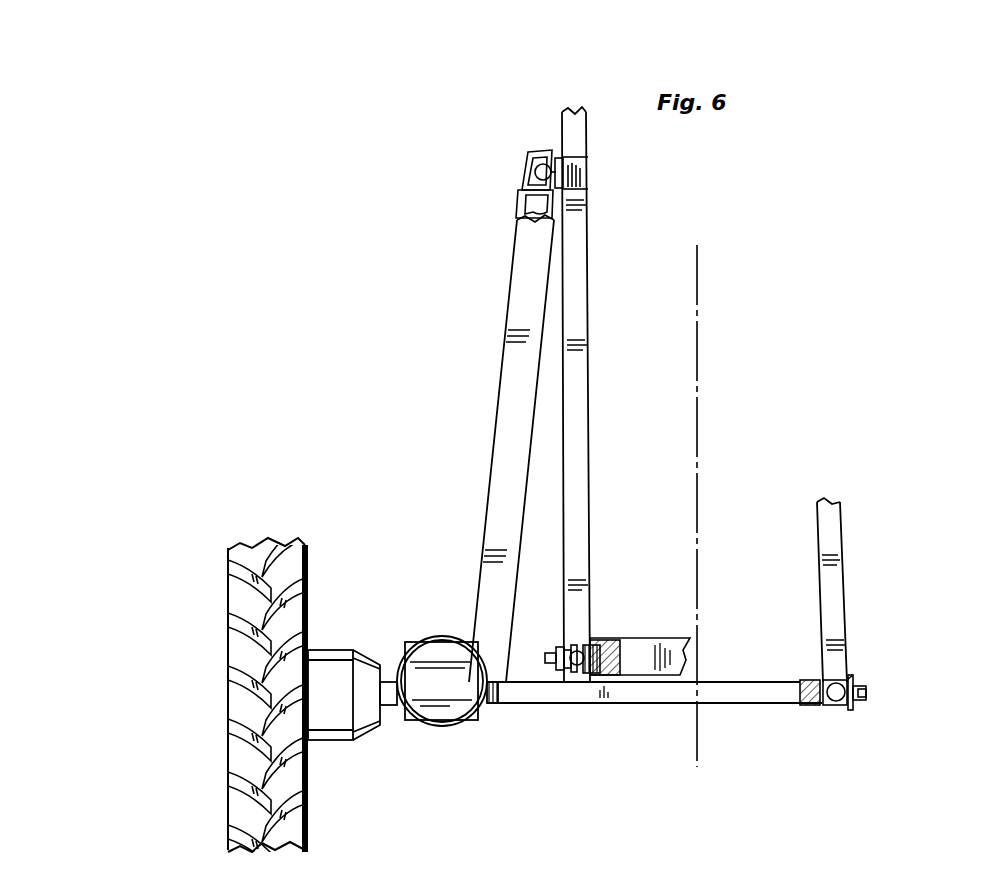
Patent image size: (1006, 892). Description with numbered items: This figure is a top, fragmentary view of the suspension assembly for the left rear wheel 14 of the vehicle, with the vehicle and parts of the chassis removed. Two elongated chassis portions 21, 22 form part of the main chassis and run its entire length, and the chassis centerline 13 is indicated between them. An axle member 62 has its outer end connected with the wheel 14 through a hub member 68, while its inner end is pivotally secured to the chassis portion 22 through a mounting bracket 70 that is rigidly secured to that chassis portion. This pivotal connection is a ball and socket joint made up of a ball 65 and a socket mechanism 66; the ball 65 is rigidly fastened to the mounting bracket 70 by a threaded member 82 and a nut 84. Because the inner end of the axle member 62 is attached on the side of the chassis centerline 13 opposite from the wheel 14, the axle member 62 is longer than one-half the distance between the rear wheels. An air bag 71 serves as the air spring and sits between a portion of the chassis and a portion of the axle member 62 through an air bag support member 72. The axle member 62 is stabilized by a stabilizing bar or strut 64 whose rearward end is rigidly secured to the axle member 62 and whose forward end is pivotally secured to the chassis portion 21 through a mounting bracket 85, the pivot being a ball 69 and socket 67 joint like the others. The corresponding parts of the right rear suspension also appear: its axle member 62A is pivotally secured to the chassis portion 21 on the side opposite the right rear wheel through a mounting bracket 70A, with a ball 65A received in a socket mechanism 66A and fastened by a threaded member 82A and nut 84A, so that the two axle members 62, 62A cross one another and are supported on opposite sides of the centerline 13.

The chassis centerline 13 is at (705, 315).
The left rear wheel 14 is at (240, 636).
The chassis portion 21 is at (582, 347).
The chassis portion 22 is at (830, 546).
The axle member 62 is at (650, 697).
The axle member 62A is at (670, 655).
The stabilizing bar or strut 64 is at (513, 392).
The ball 65 is at (837, 710).
The ball 65A is at (580, 673).
The socket mechanism 66 is at (805, 708).
The socket mechanism 66A is at (612, 645).
The socket 67 is at (530, 206).
The hub member 68 is at (333, 668).
The ball 69 is at (528, 178).
The mounting bracket 70 is at (857, 678).
The mounting bracket 70A is at (567, 673).
The air bag 71 is at (448, 636).
The air bag support member 72 is at (413, 657).
The threaded member 82 is at (870, 695).
The threaded member 82A is at (545, 656).
The nut 84 is at (860, 683).
The nut 84A is at (550, 673).
The mounting bracket 85 is at (563, 155).